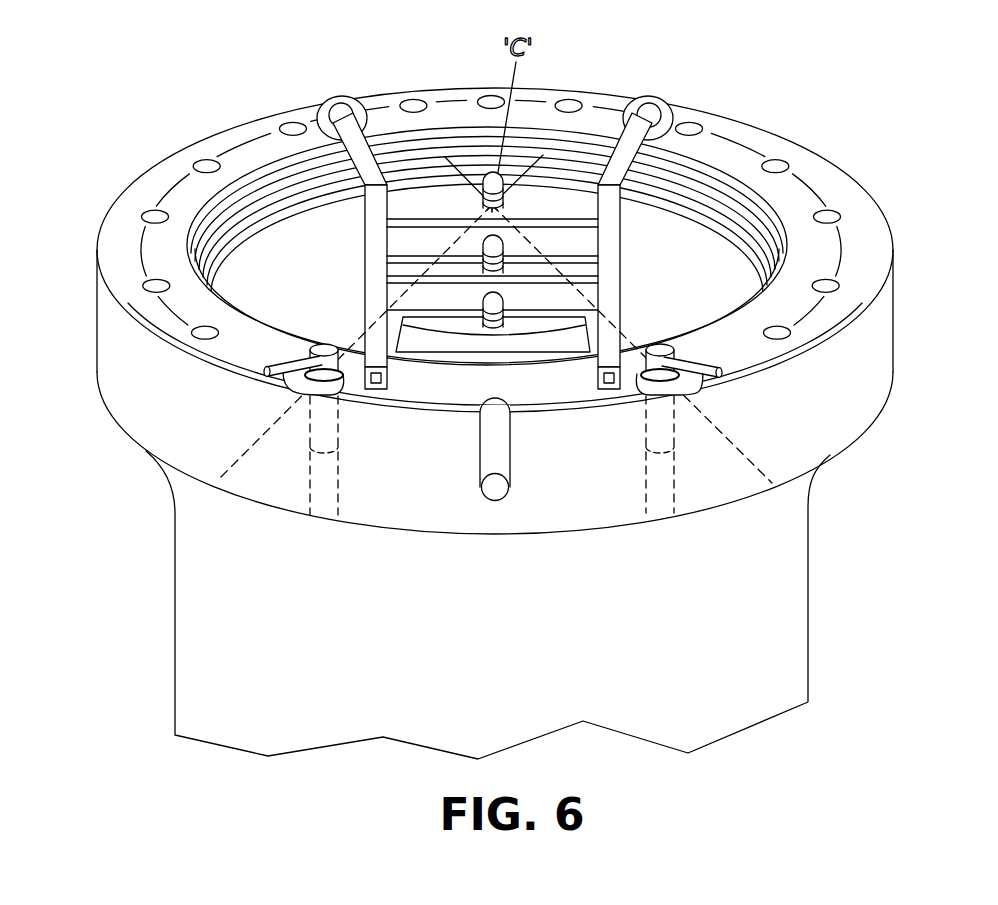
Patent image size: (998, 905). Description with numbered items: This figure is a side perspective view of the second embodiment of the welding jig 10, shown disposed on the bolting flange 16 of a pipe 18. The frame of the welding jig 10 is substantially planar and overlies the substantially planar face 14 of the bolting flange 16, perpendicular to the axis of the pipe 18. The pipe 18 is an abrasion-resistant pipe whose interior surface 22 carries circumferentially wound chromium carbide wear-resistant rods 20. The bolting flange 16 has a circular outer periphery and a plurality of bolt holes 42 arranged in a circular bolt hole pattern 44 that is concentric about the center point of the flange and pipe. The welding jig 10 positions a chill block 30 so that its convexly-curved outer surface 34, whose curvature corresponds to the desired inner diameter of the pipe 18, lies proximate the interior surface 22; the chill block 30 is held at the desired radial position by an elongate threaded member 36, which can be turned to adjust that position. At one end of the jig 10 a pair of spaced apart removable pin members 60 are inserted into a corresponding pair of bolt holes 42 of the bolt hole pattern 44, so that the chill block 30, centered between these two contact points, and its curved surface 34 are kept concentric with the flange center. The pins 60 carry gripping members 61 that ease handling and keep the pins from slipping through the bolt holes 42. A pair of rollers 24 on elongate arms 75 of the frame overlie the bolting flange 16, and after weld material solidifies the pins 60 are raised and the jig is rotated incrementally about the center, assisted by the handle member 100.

The welding jig 10 is at (620, 300).
The substantially planar face 14 is at (113, 255).
The bolting flange 16 is at (855, 368).
The pipe 18 is at (128, 398).
The chromium carbide wear-resistant rods 20 is at (718, 205).
The interior surface 22 is at (727, 190).
The rollers 24 is at (342, 97).
The chill block 30 is at (433, 322).
The convexly-curved outer surface 34 is at (463, 343).
The elongate threaded member 36 is at (485, 172).
The bolt holes 42 is at (875, 301).
The circular bolt hole pattern 44 is at (841, 233).
The removable pin members 60 is at (325, 350).
The gripping members 61 is at (293, 390).
The elongate arms 75 is at (364, 152).
The handle member 100 is at (500, 458).